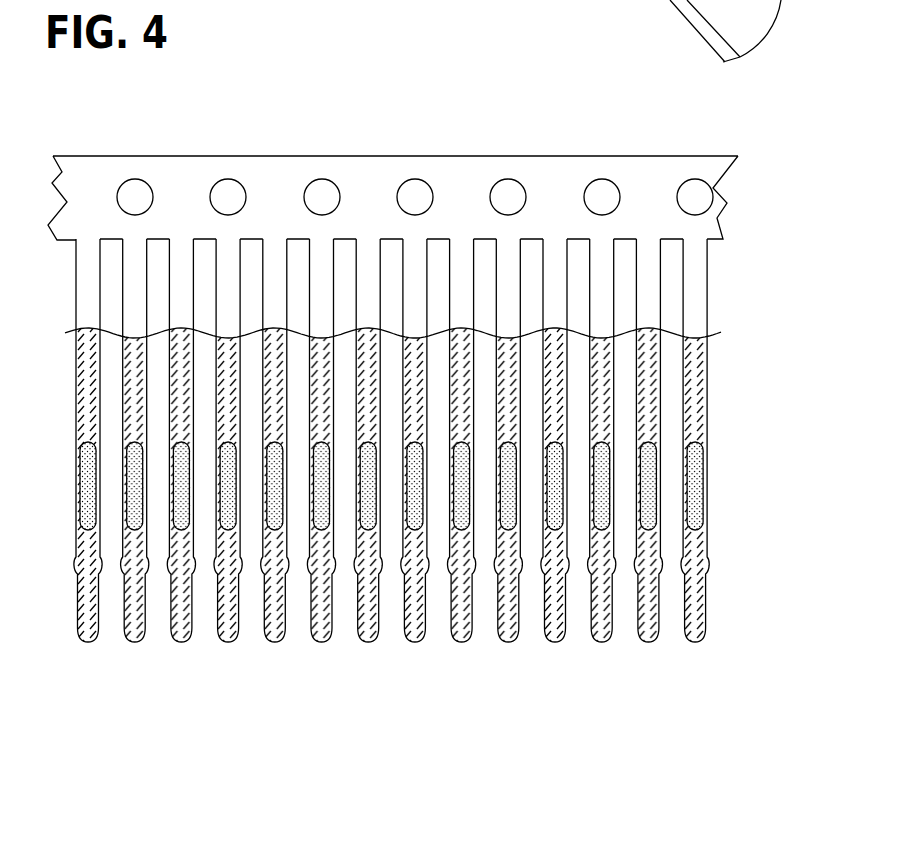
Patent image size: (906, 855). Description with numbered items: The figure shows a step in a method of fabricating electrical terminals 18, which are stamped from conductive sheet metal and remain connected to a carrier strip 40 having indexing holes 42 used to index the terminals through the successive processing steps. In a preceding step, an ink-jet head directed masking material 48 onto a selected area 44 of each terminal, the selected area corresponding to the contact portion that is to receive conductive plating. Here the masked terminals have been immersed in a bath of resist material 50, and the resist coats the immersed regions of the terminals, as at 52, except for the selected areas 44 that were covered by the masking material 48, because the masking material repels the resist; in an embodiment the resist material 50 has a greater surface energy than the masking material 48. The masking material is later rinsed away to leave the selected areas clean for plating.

The terminals 18 is at (598, 640).
The carrier strip 40 is at (186, 180).
The indexing holes 42 is at (403, 210).
The selected area 44 is at (693, 437).
The masking material 48 is at (700, 497).
The resist material 50 is at (627, 330).
The resist coating 52 is at (703, 370).